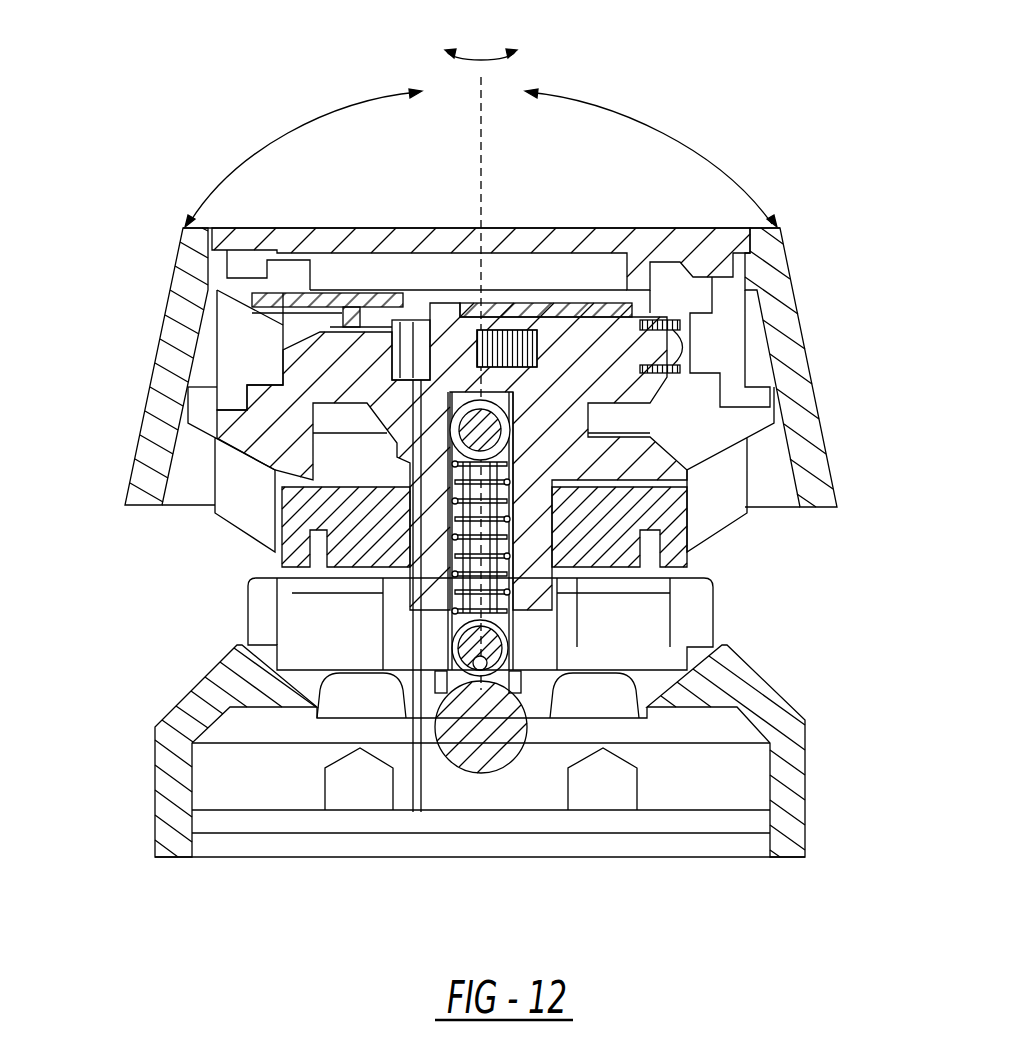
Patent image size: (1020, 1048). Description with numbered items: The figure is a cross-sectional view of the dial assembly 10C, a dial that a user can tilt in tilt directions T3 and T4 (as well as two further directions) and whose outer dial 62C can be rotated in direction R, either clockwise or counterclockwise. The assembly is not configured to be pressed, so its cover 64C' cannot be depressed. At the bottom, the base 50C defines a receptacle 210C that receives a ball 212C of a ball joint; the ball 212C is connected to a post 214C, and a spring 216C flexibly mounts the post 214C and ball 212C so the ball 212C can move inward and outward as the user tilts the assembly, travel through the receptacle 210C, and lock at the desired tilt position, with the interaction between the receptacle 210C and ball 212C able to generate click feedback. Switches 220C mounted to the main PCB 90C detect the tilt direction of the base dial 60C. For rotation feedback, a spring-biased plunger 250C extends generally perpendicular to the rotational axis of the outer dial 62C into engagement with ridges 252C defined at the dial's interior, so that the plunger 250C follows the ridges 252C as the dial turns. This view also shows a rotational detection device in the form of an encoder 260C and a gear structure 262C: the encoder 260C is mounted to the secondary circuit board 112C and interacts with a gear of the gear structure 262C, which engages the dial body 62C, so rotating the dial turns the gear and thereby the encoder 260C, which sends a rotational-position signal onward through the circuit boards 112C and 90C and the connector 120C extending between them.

The dial assembly 10C is at (134, 154).
The tilt direction T3 is at (303, 158).
The tilt direction T4 is at (651, 158).
The rotation direction R is at (481, 44).
The cover 64C' is at (481, 242).
The outer dial 62C is at (800, 418).
The gear structure 262C is at (300, 288).
The encoder 260C is at (300, 360).
The spring-biased plunger 250C is at (640, 310).
The ridges 252C is at (655, 322).
The secondary circuit board 112C is at (350, 347).
The spring 216C is at (478, 550).
The connector 120C is at (472, 507).
The post 214C is at (475, 572).
The base dial 60C is at (738, 428).
The ball 212C is at (482, 735).
The receptacle 210C is at (382, 333).
The base 50C is at (182, 777).
The main PCB 90C is at (265, 826).
The switches 220C is at (357, 796).